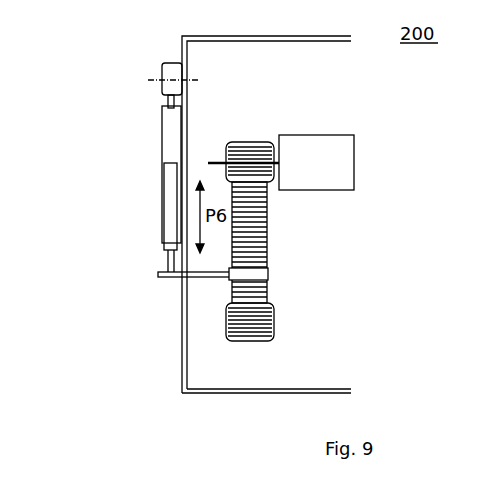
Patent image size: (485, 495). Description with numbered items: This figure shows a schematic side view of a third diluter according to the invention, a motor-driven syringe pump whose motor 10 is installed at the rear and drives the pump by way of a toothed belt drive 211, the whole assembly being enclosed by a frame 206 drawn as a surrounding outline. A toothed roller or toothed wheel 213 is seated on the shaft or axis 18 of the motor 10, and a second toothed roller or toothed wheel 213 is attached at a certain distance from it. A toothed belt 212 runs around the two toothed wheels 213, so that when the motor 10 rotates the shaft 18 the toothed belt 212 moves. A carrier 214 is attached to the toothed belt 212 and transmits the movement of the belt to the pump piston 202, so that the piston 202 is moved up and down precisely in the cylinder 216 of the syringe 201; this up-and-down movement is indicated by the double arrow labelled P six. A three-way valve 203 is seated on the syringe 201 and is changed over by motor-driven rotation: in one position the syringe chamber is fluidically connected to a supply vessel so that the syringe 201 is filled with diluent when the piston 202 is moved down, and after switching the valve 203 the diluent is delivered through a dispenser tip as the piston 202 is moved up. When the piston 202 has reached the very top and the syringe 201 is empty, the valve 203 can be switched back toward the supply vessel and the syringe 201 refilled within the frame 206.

The housing frame 206 is at (233, 38).
The three-way valve 203 is at (162, 66).
The cylinder 216 is at (162, 118).
The piston 202 is at (163, 245).
The syringe 201 is at (143, 175).
The shaft 18 is at (212, 160).
The motor 10 is at (329, 162).
The toothed wheel 213 is at (269, 142).
The toothed belt 212 is at (268, 228).
The carrier 214 is at (229, 276).
The toothed belt drive 211 is at (350, 268).